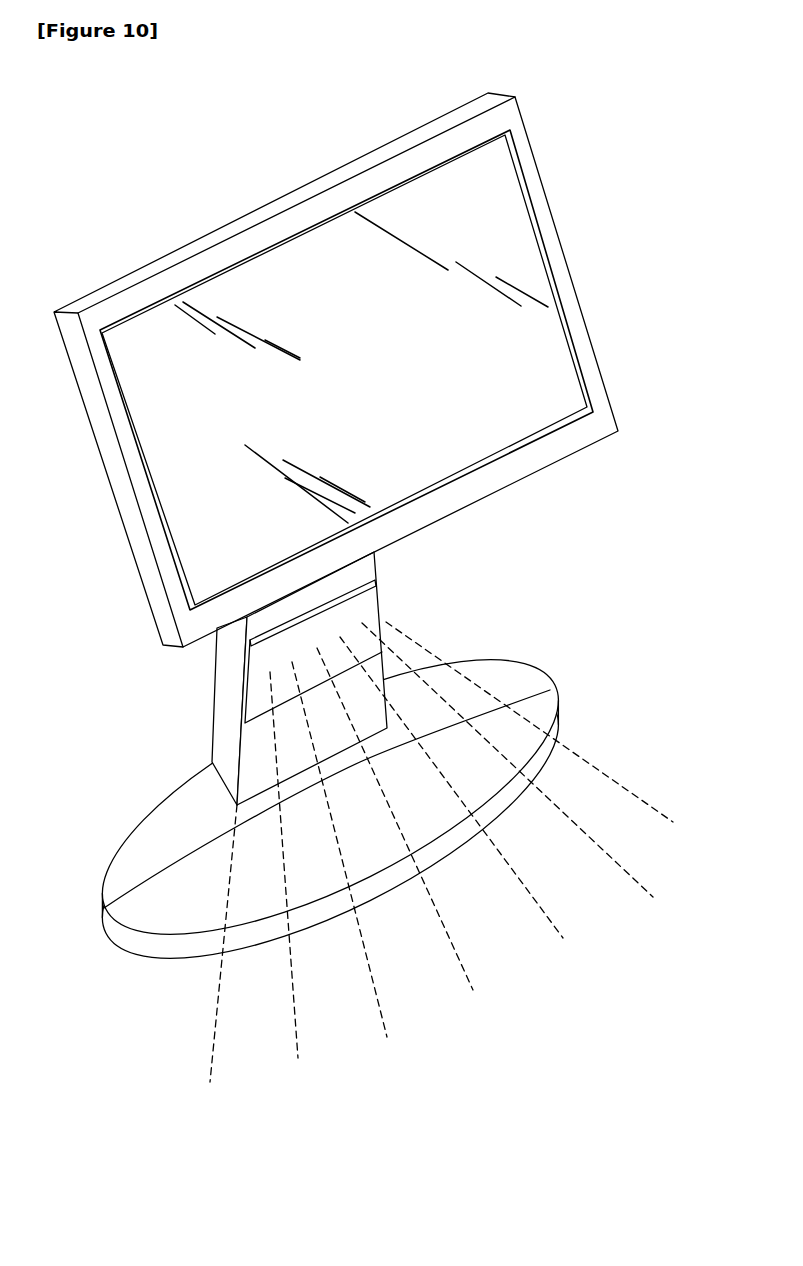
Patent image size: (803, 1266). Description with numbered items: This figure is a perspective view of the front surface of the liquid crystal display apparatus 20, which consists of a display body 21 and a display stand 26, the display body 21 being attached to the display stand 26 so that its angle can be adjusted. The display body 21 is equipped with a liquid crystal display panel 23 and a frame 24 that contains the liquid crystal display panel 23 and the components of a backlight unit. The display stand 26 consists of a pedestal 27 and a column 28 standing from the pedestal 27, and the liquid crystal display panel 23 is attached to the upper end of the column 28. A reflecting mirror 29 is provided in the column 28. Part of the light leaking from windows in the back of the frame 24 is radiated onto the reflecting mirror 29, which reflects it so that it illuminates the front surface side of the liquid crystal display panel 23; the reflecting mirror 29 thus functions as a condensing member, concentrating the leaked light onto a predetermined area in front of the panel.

The liquid crystal display apparatus 20 is at (185, 197).
The display body 21 is at (630, 135).
The liquid crystal display panel 23 is at (513, 248).
The frame 24 is at (558, 270).
The display stand 26 is at (133, 662).
The pedestal 27 is at (215, 803).
The column 28 is at (213, 735).
The reflecting mirror 29 is at (376, 652).